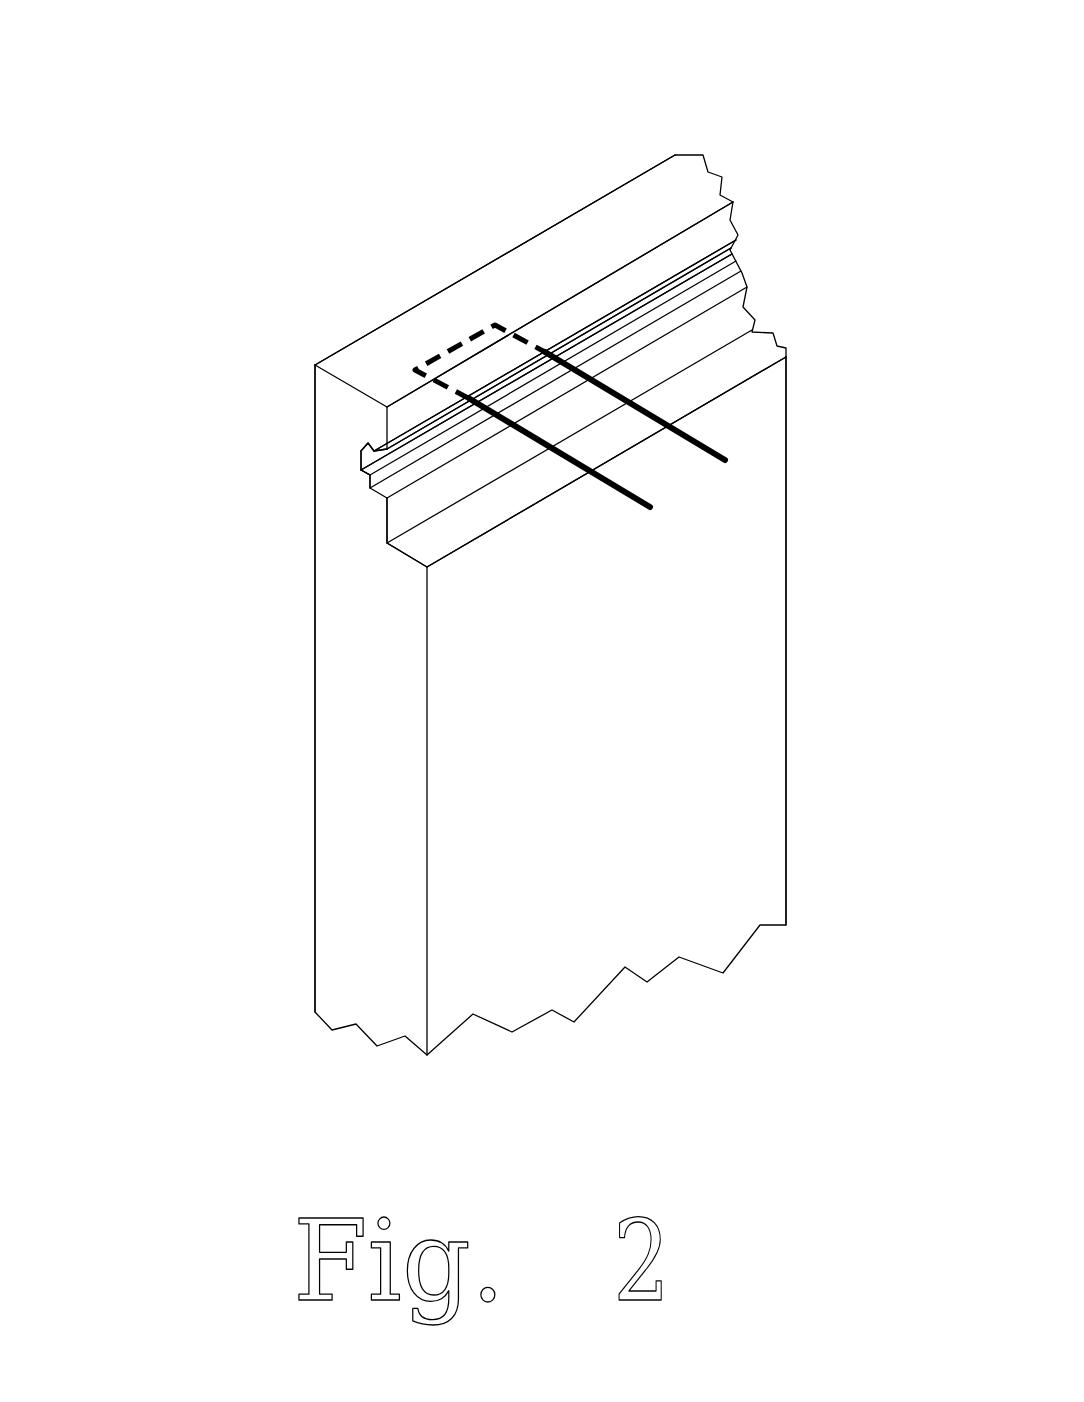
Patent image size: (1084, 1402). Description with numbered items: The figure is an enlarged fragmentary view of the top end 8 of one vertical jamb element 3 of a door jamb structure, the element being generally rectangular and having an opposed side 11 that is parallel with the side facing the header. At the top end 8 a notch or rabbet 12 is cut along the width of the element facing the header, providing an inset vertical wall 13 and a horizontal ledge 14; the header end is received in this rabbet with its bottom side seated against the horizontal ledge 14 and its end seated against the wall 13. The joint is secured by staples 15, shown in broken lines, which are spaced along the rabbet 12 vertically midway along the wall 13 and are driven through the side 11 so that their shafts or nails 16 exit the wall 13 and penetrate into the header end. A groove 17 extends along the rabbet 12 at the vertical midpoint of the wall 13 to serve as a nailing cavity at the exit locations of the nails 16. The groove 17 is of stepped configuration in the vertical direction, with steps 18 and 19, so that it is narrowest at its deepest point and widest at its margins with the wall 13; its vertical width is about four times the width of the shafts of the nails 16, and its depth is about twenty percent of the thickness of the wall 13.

The vertical jamb element 3 is at (550, 605).
The top end 8 is at (524, 253).
The opposed side 11 is at (233, 688).
The notch or rabbet 12 is at (249, 611).
The inset vertical wall 13 is at (616, 244).
The horizontal ledge 14 is at (687, 524).
The staple 15 is at (380, 268).
The shaft or nail 16 is at (597, 573).
The groove 17 is at (218, 416).
The step 18 is at (279, 339).
The step 19 is at (231, 533).